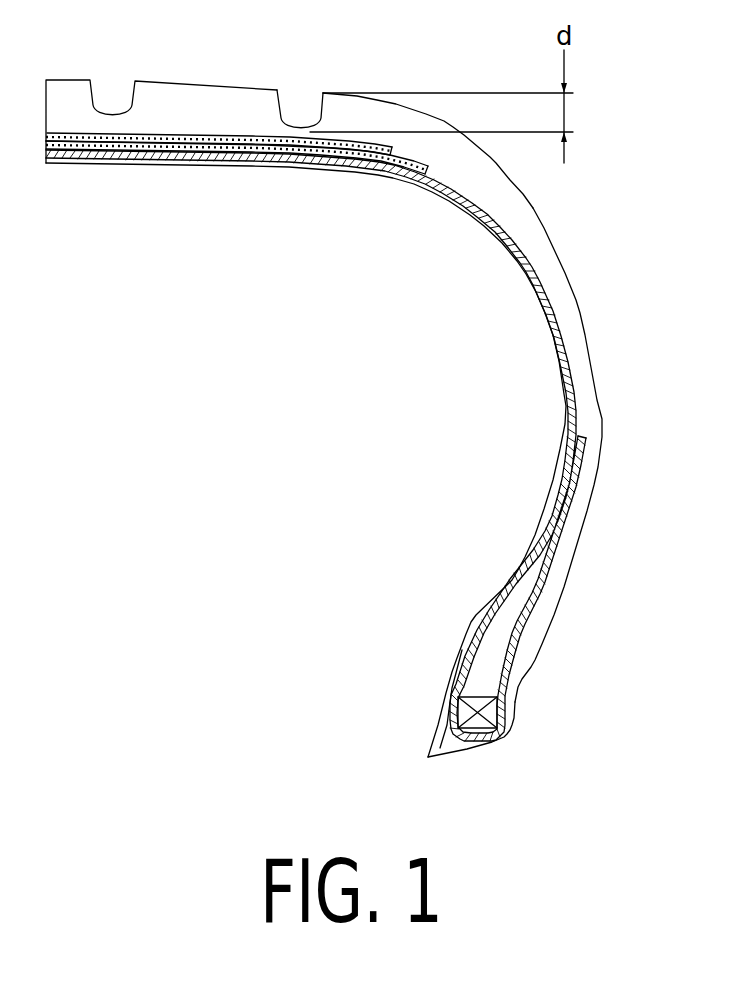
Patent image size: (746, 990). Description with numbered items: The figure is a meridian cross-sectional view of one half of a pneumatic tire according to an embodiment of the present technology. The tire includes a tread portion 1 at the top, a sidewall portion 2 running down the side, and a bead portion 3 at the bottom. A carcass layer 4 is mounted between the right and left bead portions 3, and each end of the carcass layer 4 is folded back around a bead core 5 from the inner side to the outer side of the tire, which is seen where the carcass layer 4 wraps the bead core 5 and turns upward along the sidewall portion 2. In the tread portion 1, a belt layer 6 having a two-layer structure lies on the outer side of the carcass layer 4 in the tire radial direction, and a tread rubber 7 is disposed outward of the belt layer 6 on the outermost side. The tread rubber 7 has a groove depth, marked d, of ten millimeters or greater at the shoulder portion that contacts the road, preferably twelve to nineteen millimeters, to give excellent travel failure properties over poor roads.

The tread portion 1 is at (201, 79).
The sidewall portion 2 is at (596, 505).
The bead portion 3 is at (521, 718).
The carcass layer 4 is at (565, 342).
The bead core 5 is at (477, 722).
The belt layer 6 is at (408, 168).
The tread rubber 7 is at (262, 102).